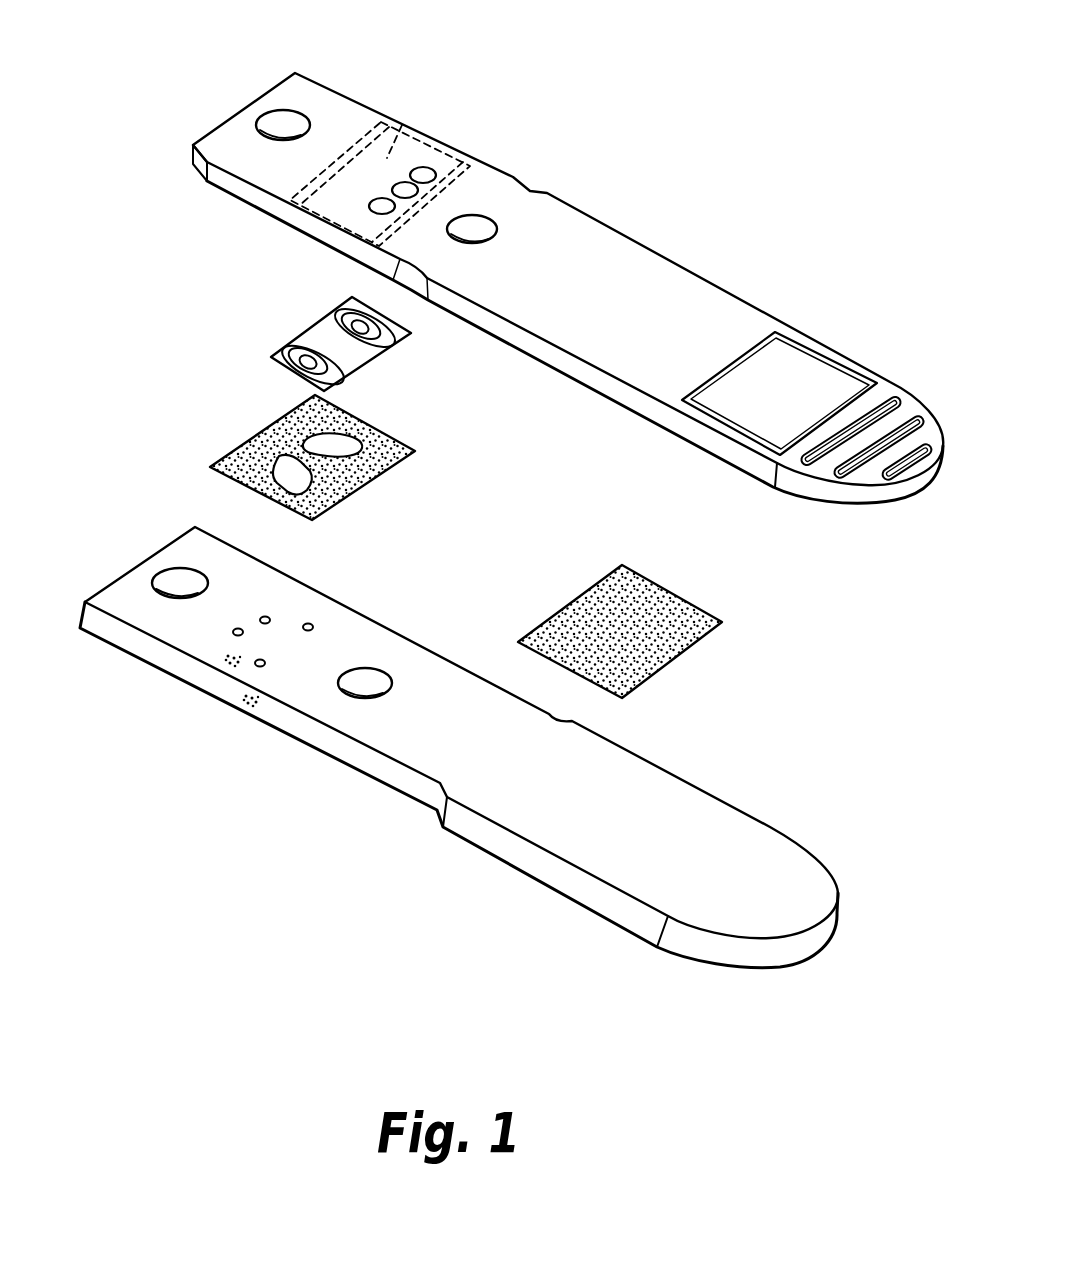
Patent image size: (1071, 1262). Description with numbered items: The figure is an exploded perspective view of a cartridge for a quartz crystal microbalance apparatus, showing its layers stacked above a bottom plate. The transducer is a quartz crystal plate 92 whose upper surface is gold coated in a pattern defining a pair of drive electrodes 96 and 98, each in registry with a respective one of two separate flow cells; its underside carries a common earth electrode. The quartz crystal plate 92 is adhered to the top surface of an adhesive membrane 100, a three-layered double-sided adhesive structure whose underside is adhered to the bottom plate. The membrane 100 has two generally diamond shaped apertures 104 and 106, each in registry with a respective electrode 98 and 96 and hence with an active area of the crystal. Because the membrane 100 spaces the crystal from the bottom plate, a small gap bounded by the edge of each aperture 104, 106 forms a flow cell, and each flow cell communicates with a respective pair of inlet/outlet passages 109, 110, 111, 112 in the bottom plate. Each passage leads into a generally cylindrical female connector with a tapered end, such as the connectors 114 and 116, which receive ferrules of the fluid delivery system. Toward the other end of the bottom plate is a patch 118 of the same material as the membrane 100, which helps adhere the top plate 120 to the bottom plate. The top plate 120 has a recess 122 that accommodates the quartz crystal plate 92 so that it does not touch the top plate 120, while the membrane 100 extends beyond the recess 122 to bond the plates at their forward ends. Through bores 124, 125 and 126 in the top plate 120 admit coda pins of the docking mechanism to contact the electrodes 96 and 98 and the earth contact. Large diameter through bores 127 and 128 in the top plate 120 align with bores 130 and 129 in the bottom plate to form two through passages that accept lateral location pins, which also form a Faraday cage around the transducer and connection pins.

The quartz crystal plate 92 is at (268, 358).
The drive electrode 96 is at (337, 310).
The drive electrode 98 is at (290, 350).
The adhesive membrane 100 is at (277, 430).
The aperture 104 is at (292, 467).
The aperture 106 is at (338, 445).
The inlet/outlet passage 109 is at (235, 632).
The inlet/outlet passage 110 is at (263, 667).
The inlet/outlet passage 111 is at (265, 617).
The inlet/outlet passage 112 is at (310, 627).
The female connector 114 is at (222, 660).
The female connector 116 is at (257, 707).
The patch 118 is at (722, 622).
The top plate 120 is at (653, 250).
The recess 122 is at (405, 123).
The through bore 124 is at (370, 206).
The through bore 125 is at (393, 188).
The through bore 126 is at (430, 168).
The large diameter through bore 127 is at (277, 116).
The large diameter through bore 128 is at (479, 214).
The large diameter through bore 129 is at (396, 692).
The large diameter through bore 130 is at (160, 585).